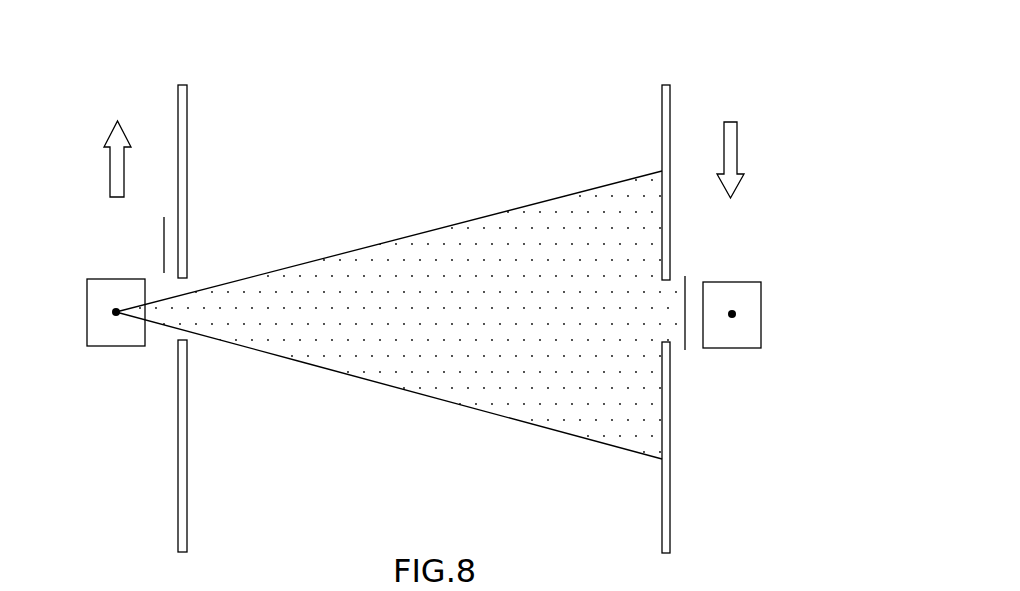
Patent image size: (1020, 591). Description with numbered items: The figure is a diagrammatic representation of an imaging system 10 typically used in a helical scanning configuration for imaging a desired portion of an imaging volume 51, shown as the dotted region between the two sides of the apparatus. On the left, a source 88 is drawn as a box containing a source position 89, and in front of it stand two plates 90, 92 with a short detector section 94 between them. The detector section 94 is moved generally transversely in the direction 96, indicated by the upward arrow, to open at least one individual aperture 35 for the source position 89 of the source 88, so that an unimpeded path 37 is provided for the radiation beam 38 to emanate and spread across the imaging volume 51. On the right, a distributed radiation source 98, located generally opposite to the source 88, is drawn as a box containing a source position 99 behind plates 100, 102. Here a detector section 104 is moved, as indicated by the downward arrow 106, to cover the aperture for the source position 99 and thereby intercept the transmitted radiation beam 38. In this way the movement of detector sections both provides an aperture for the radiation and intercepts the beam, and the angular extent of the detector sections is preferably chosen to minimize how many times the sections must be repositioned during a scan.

The imaging system 10 is at (702, 47).
The individual aperture 35 is at (143, 320).
The unimpeded path 37 is at (162, 324).
The radiation beam 38 is at (443, 399).
The imaging volume 51 is at (433, 169).
The source 88 is at (87, 290).
The source position 89 is at (113, 313).
The upper source-side plate 90 is at (187, 122).
The lower source-side plate 92 is at (187, 505).
The detector section 94 is at (164, 246).
The direction 96 is at (110, 182).
The distributed radiation source 98 is at (761, 312).
The source position 99 is at (731, 310).
The upper detector-side plate 100 is at (662, 145).
The lower detector-side plate 102 is at (662, 498).
The detector section 104 is at (685, 350).
The plate movement direction arrow 106 is at (737, 146).